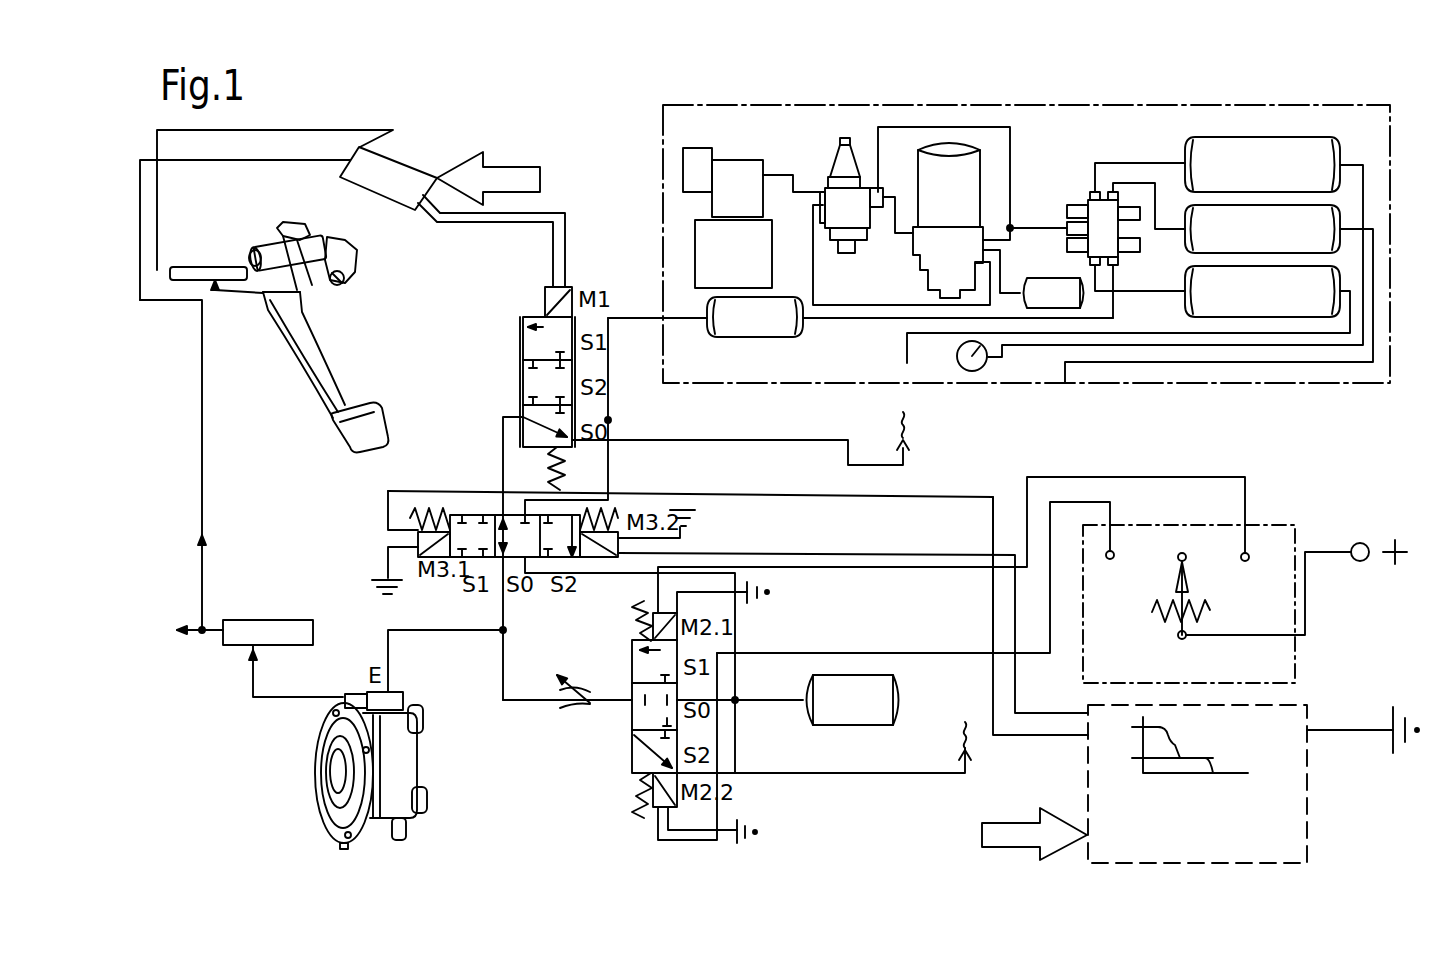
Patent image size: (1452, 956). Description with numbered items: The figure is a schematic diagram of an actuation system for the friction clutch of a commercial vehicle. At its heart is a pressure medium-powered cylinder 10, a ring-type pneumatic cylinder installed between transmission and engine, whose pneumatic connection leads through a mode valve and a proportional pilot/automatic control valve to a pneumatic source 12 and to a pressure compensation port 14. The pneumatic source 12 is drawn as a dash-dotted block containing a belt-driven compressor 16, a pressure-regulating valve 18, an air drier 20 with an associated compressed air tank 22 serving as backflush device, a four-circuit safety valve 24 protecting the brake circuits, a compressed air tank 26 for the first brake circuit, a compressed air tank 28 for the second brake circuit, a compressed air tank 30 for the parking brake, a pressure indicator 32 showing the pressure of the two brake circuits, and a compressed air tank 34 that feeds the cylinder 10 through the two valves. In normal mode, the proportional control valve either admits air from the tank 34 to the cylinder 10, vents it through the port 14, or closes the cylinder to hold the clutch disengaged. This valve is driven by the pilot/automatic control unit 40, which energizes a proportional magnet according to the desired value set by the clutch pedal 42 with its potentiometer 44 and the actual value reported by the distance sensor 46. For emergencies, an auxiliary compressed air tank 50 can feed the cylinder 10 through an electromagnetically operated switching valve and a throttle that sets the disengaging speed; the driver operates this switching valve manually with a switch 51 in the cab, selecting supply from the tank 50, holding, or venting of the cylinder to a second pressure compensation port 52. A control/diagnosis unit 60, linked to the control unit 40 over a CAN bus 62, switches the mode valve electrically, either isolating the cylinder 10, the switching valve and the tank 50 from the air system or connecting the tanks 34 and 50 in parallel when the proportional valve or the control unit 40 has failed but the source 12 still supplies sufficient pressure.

The pressure medium-powered cylinder 10 is at (375, 832).
The pneumatic source 12 is at (1073, 106).
The pressure compensation port 14 is at (910, 445).
The belt-driven compressor 16 is at (745, 175).
The pressure-regulating valve 18 is at (858, 236).
The air drier 20 is at (955, 160).
The compressed air tank 22 is at (1036, 290).
The four-circuit safety valve 24 is at (1090, 207).
The compressed air tank 26 is at (1323, 172).
The compressed air tank 28 is at (1322, 243).
The compressed air tank 30 is at (1322, 300).
The pressure indicator 32 is at (968, 370).
The compressed air tank 34 is at (740, 332).
The pilot/automatic control unit 40 is at (410, 163).
The clutch pedal 42 is at (310, 362).
The potentiometer 44 is at (206, 268).
The distance sensor 46 is at (275, 625).
The auxiliary compressed air tank 50 is at (862, 712).
The switch 51 is at (1290, 663).
The pressure compensation port 52 is at (975, 752).
The control/diagnosis unit 60 is at (1137, 855).
The CAN bus 62 is at (525, 178).